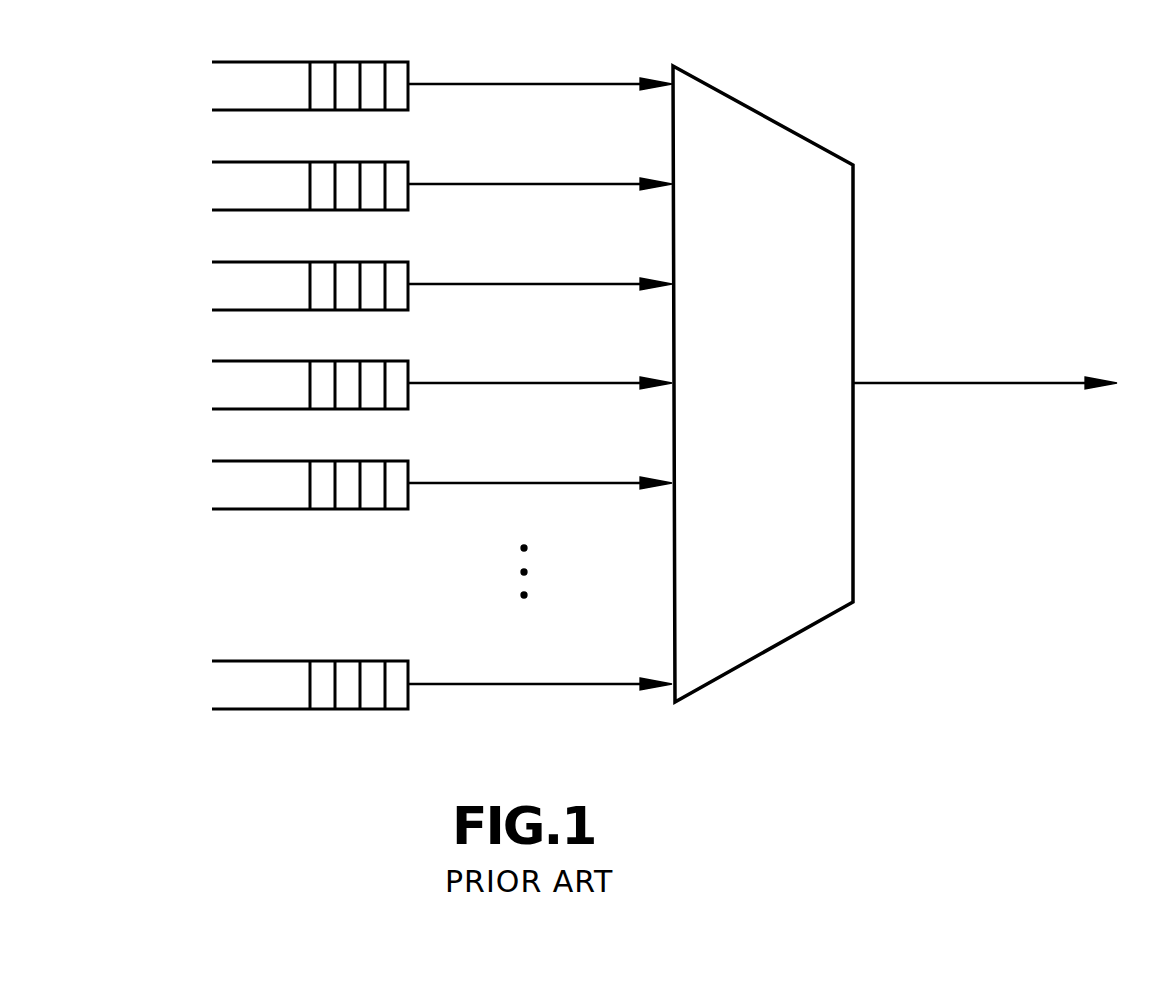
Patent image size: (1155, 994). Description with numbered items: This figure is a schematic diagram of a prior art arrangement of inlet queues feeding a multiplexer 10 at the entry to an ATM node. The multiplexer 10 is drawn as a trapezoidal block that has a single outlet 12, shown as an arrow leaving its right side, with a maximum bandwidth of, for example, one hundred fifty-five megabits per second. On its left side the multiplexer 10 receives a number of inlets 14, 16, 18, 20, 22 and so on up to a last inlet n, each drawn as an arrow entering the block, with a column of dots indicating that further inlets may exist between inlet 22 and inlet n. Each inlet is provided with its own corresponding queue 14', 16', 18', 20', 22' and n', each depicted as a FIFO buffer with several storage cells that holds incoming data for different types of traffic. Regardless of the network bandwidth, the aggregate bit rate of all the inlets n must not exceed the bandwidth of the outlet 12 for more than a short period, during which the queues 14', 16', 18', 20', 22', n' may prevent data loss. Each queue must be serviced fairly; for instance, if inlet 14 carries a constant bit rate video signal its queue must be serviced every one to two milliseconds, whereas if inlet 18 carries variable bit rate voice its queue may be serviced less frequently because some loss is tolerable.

The multiplexer 10 is at (760, 112).
The outlet 12 is at (968, 383).
The inlet 14 is at (540, 63).
The inlet 16 is at (540, 163).
The inlet 18 is at (540, 263).
The inlet 20 is at (540, 362).
The inlet 22 is at (540, 462).
The inlet n is at (540, 661).
The queue 14' is at (262, 82).
The queue 16' is at (262, 182).
The queue 18' is at (262, 282).
The queue 20' is at (262, 381).
The queue 22' is at (262, 481).
The queue n' is at (272, 681).